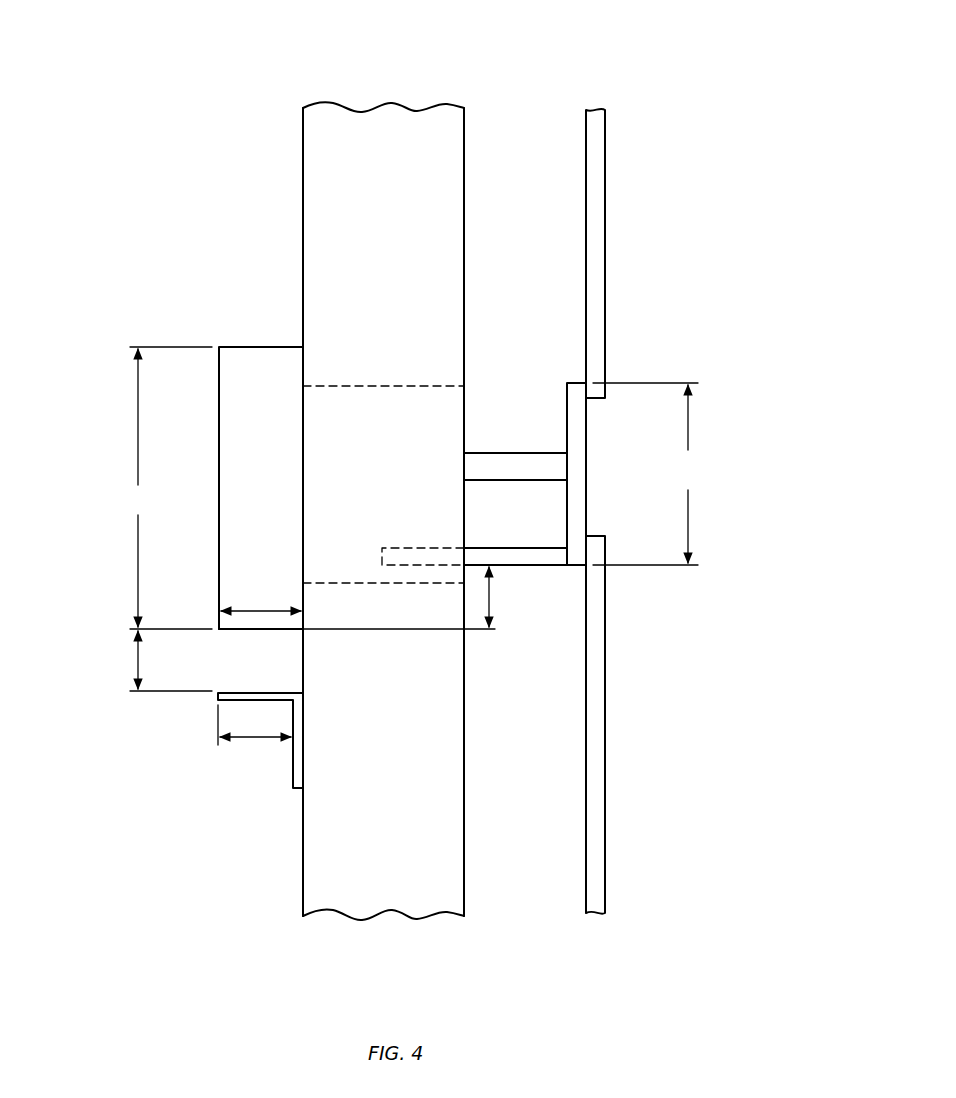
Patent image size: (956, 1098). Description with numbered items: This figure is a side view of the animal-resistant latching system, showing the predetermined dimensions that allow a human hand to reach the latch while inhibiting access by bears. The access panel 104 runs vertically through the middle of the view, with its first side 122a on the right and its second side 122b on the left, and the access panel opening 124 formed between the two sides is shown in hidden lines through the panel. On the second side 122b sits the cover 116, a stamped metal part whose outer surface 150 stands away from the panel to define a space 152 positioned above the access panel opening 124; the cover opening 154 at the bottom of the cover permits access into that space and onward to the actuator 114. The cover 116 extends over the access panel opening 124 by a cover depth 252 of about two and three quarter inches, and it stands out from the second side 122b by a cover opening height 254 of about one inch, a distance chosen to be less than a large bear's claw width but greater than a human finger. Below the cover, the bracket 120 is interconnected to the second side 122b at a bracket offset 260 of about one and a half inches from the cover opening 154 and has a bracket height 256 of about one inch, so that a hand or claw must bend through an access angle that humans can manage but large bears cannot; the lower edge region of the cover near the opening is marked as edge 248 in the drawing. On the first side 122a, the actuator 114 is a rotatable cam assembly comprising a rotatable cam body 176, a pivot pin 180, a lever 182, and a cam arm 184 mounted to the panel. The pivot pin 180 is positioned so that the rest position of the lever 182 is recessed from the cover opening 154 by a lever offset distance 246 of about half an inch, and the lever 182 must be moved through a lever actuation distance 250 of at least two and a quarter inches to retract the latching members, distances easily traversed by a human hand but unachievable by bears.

The access panel 104 is at (379, 93).
The first side of the access panel 122a is at (466, 157).
The second side of the access panel 122b is at (302, 162).
The access panel opening 124 is at (416, 419).
The cover 116 is at (252, 346).
The space 152 is at (250, 398).
The outer surface 150 is at (218, 550).
The cover opening 154 is at (262, 631).
The lower edge of bracket 248 is at (228, 631).
The bracket 120 is at (292, 776).
The rotatable cam body 176 is at (588, 437).
The pivot pin 180 is at (522, 452).
The lever 182 is at (538, 567).
The cam arm 184 is at (606, 315).
The actuator 114 is at (725, 541).
The lever offset distance 246 is at (491, 600).
The lever actuation distance 250 is at (646, 474).
The cover depth 252 is at (165, 487).
The cover opening height 254 is at (258, 610).
The bracket height 256 is at (252, 739).
The bracket offset 260 is at (137, 660).